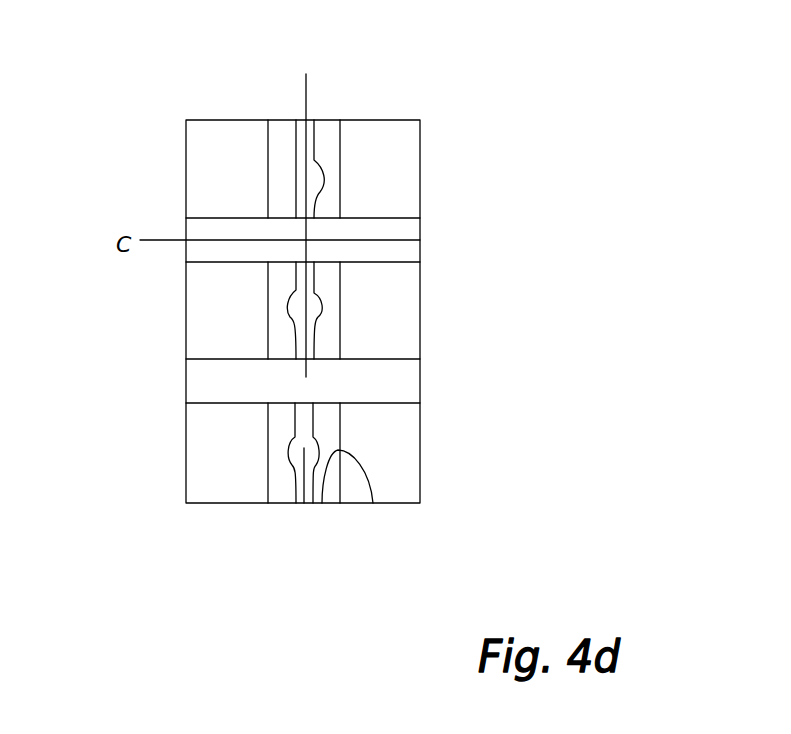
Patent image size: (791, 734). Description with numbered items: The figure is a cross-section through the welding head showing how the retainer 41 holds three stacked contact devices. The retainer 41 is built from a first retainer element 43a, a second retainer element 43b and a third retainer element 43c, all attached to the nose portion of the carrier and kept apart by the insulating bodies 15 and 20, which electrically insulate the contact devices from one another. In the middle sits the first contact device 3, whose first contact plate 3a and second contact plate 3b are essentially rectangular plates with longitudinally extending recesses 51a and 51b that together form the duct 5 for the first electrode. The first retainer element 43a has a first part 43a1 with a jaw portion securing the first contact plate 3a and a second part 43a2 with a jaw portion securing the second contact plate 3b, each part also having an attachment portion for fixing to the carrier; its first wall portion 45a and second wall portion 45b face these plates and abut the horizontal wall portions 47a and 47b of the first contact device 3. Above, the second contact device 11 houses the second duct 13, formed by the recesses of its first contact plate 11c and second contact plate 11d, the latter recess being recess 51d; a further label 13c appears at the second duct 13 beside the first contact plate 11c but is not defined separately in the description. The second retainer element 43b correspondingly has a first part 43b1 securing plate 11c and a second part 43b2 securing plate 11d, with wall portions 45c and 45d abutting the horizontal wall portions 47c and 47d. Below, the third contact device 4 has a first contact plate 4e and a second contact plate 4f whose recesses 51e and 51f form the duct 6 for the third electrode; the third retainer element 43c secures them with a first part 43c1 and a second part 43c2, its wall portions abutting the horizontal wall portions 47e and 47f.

The retainer 41 is at (102, 407).
The insulating body 15 is at (408, 230).
The insulating body 20 is at (407, 392).
The second contact device 11 is at (357, 120).
The first contact plate 11c is at (266, 120).
The second contact plate 11d is at (320, 158).
The duct 6 is at (312, 475).
The first contact device 3 is at (287, 330).
The first contact plate 3a is at (287, 302).
The second contact plate 3b is at (337, 268).
The duct 5 is at (337, 291).
The third contact device 4 is at (308, 568).
The first contact plate 4e is at (268, 404).
The second contact plate 4f is at (373, 503).
The second duct 13 is at (305, 177).
The center line section c 13c is at (305, 184).
The first retainer element 43a is at (168, 343).
The first part 43a1 is at (211, 341).
The second part 43a2 is at (406, 313).
The second retainer element 43b is at (436, 176).
The first part 43b1 is at (200, 163).
The second part 43b2 is at (422, 119).
The third retainer element 43c is at (130, 548).
The first part 43c1 is at (190, 476).
The second part 43c2 is at (412, 487).
The first wall portion 45a is at (284, 342).
The second wall portion 45b is at (337, 292).
The first wall portion 45c is at (257, 188).
The second wall portion 45d is at (324, 187).
The horizontal wall portion 47a is at (282, 330).
The horizontal wall portion 47b is at (340, 298).
The horizontal wall portion 47c is at (269, 184).
The horizontal wall portion 47d is at (314, 160).
The horizontal wall portion 47e is at (270, 503).
The horizontal wall portion 47f is at (323, 505).
The longitudinally extending recess 51a is at (287, 297).
The longitudinally extending recess 51b is at (315, 303).
The longitudinally extending recess 51d is at (342, 186).
The longitudinally extending recess 51e is at (271, 403).
The longitudinally extending recess 51f is at (330, 503).